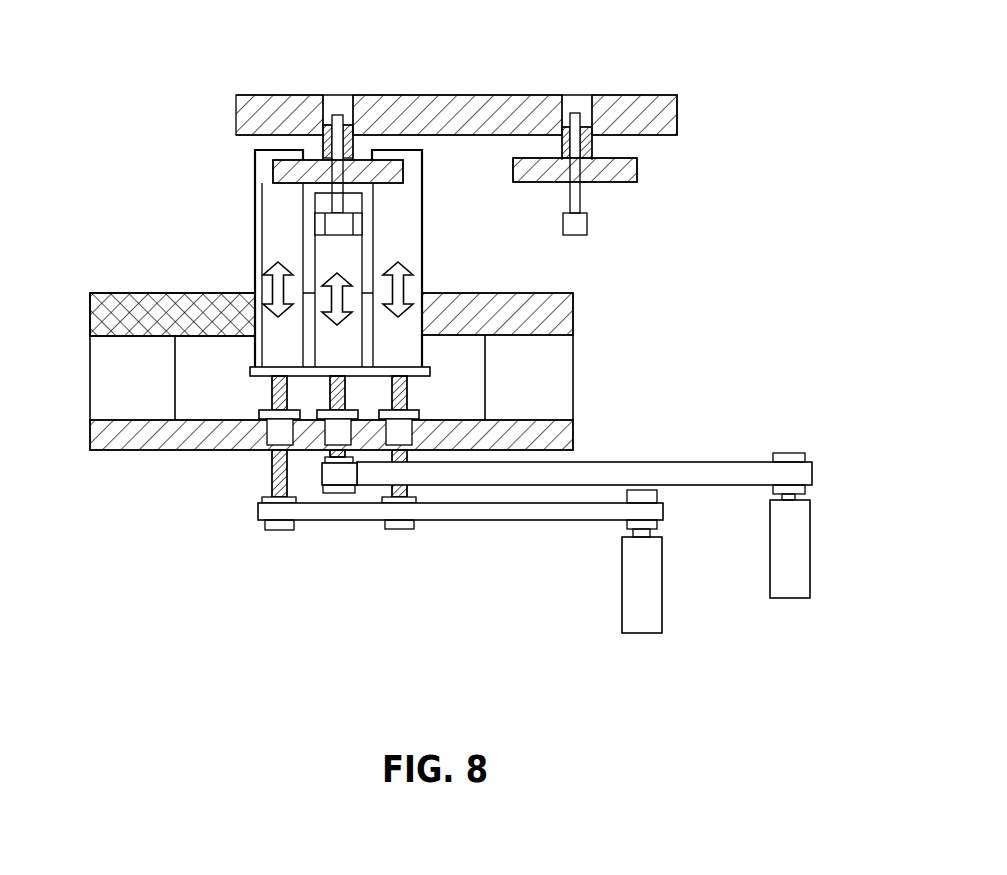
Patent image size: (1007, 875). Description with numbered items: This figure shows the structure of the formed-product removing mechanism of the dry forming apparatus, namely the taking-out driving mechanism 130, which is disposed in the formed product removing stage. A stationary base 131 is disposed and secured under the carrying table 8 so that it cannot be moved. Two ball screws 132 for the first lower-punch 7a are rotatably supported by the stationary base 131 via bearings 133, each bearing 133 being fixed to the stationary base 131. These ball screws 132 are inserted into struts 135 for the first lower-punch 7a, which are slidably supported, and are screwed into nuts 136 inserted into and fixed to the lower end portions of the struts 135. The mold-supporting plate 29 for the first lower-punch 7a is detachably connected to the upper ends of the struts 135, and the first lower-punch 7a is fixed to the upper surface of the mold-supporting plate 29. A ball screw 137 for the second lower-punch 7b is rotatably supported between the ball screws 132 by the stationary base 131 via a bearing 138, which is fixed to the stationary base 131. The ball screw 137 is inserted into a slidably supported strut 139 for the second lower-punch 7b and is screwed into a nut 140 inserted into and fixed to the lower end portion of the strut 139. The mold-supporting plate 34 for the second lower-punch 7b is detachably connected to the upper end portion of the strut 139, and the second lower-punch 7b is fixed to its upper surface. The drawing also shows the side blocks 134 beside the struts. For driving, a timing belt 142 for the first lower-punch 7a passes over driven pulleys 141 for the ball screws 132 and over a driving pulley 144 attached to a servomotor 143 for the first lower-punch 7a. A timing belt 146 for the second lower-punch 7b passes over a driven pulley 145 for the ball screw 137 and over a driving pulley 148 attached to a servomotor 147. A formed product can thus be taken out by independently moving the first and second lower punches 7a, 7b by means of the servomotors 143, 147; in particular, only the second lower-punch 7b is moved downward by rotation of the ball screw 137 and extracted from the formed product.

The taking-out driving mechanism 130 is at (172, 66).
The carrying table 8 is at (628, 95).
The first lower-punch 7a is at (362, 138).
The second lower-punch 7b is at (343, 95).
The mold-supporting plate 29 is at (388, 165).
The strut 135 is at (253, 227).
The strut 139 is at (358, 260).
The mold-supporting plate 34 is at (345, 226).
The nut 136 is at (252, 368).
The side block 134 is at (502, 315).
The nut 140 is at (470, 335).
The stationary base 131 is at (173, 437).
The ball screw 132 is at (265, 390).
The bearing 133 is at (262, 411).
The bearing 138 is at (413, 437).
The ball screw 137 is at (408, 398).
The timing belt 146 is at (693, 478).
The driven pulley 145 is at (338, 493).
The timing belt 142 is at (490, 510).
The driven pulley 141 is at (270, 528).
The driving pulley 144 is at (622, 524).
The servomotor 143 is at (653, 577).
The driving pulley 148 is at (803, 488).
The servomotor 147 is at (807, 540).